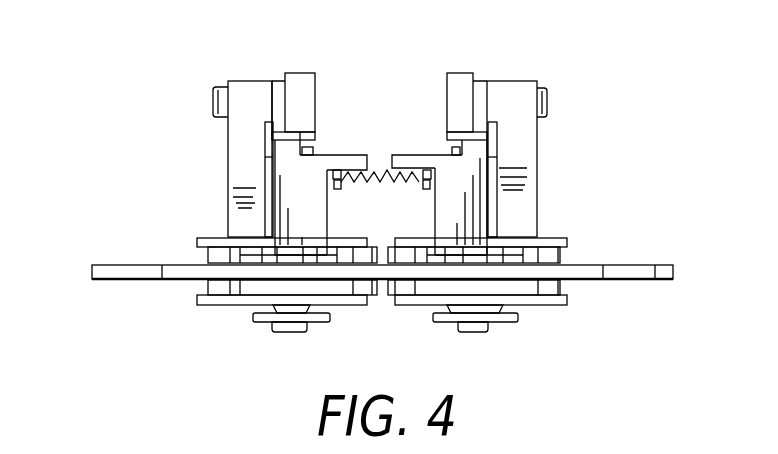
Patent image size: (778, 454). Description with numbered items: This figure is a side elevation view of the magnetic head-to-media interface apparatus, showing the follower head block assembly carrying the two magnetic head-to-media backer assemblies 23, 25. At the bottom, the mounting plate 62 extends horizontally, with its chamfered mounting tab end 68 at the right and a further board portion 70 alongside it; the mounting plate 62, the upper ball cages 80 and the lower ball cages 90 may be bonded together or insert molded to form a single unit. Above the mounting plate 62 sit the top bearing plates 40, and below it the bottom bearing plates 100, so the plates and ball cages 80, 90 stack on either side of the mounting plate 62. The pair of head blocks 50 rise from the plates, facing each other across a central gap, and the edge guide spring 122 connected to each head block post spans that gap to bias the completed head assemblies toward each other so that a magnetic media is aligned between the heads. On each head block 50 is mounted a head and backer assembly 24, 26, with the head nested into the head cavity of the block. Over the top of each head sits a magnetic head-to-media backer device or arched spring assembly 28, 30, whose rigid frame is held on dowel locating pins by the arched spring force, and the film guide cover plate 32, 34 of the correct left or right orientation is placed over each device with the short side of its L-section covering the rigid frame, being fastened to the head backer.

The magnetic head-to-media backer assembly 23 is at (570, 150).
The head and backer assembly 24 is at (517, 81).
The magnetic head-to-media backer assembly 25 is at (200, 168).
The head and backer assembly 26 is at (250, 81).
The magnetic head-to-media backer device 28 is at (485, 81).
The magnetic head-to-media backer device 30 is at (282, 81).
The film guide cover plate 32 is at (446, 81).
The film guide cover plate 34 is at (315, 84).
The top bearing plate 40 is at (556, 237).
The head block 50 is at (448, 210).
The mounting plate 62 is at (92, 273).
The chamfered mounting tab end 68 is at (673, 266).
The board layer 70 is at (593, 263).
The upper ball cage 80 is at (205, 256).
The lower ball cage 90 is at (563, 288).
The bottom bearing plate 100 is at (198, 296).
The edge guide spring 122 is at (376, 165).